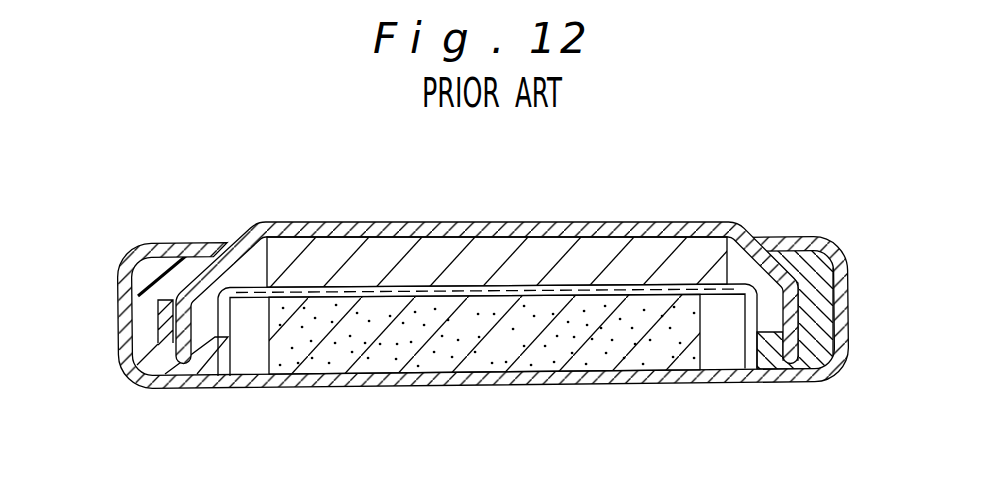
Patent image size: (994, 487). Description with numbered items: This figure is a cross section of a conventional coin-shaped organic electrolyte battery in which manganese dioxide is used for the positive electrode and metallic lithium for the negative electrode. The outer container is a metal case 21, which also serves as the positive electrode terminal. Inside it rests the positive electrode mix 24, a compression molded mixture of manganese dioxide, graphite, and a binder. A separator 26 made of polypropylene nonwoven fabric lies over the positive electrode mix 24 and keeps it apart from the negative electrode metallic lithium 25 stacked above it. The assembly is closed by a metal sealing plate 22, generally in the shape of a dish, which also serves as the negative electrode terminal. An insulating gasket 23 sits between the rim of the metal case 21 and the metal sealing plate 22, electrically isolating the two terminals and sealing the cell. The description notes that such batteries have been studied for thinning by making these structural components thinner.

The metal case 21 is at (744, 377).
The metal sealing plate 22 is at (582, 222).
The insulating gasket 23 is at (815, 273).
The positive electrode mix 24 is at (393, 366).
The negative electrode metallic lithium 25 is at (450, 258).
The separator 26 is at (328, 293).